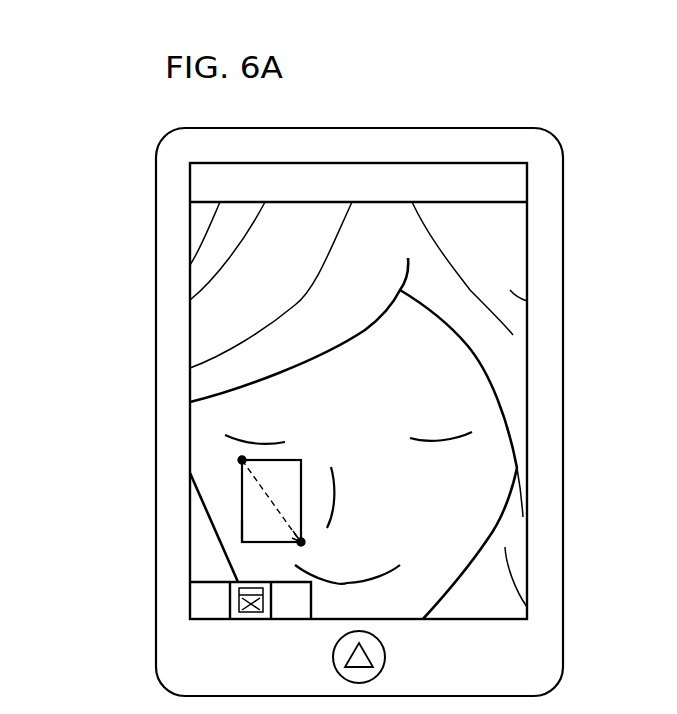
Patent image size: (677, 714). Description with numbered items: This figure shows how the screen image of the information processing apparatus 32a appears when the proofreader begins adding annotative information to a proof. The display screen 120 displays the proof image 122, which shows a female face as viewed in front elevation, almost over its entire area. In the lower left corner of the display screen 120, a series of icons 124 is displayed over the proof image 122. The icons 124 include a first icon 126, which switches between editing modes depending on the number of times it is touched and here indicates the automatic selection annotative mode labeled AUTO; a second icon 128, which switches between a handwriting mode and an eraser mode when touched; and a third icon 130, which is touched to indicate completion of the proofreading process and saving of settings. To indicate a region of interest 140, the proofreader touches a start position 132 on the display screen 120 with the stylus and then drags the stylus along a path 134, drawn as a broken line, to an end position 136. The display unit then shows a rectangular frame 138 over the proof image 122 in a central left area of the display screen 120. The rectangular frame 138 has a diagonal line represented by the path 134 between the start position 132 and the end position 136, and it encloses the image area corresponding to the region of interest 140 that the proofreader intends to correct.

The information processing apparatus 32a is at (376, 102).
The display screen 120 is at (550, 242).
The proof image 122 is at (510, 290).
The icons 124 is at (322, 650).
The first icon 126 is at (291, 619).
The second icon 128 is at (251, 619).
The third icon 130 is at (210, 619).
The start position 132 is at (242, 460).
The path 134 is at (263, 490).
The end position 136 is at (301, 542).
The rectangular frame 138 is at (242, 530).
The region of interest 140 is at (300, 461).